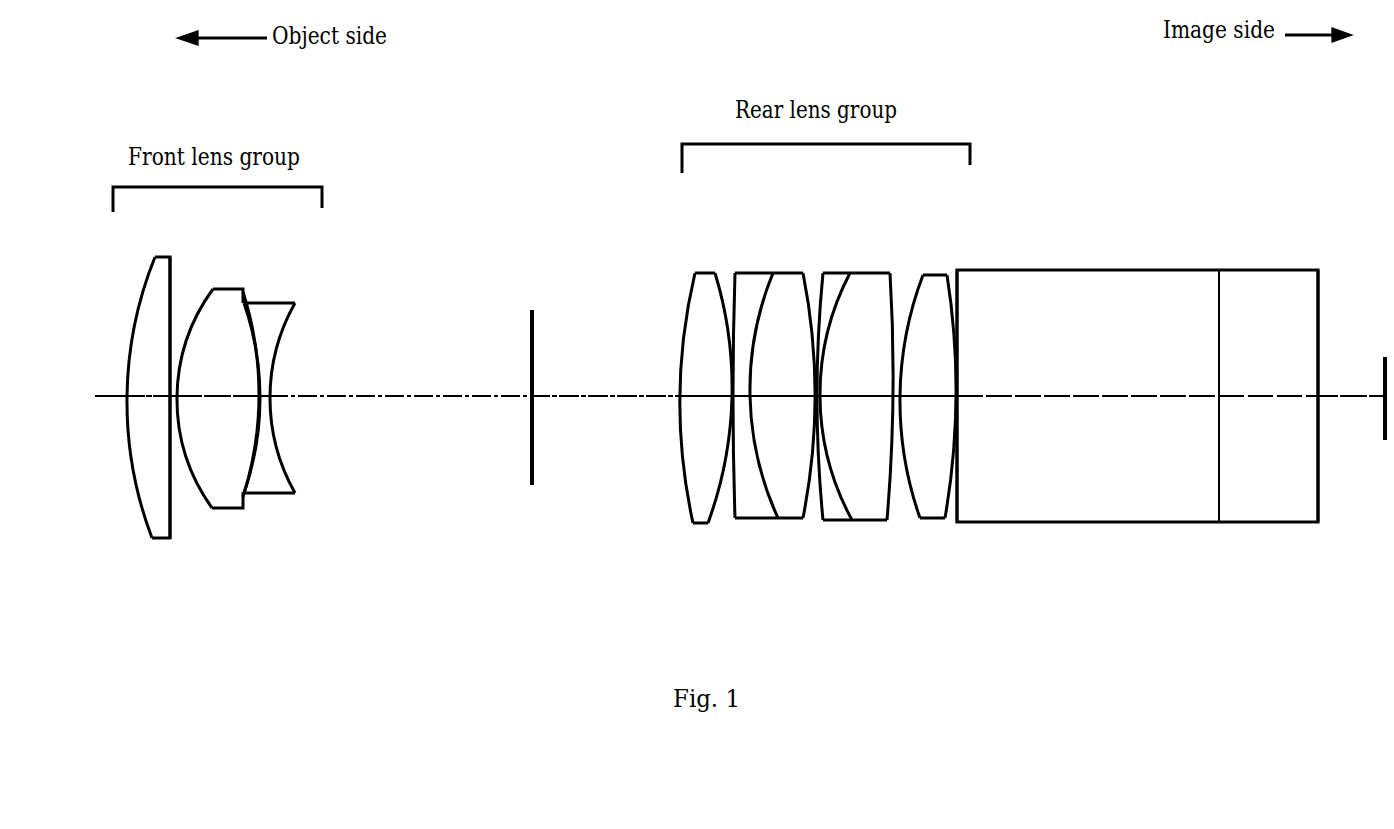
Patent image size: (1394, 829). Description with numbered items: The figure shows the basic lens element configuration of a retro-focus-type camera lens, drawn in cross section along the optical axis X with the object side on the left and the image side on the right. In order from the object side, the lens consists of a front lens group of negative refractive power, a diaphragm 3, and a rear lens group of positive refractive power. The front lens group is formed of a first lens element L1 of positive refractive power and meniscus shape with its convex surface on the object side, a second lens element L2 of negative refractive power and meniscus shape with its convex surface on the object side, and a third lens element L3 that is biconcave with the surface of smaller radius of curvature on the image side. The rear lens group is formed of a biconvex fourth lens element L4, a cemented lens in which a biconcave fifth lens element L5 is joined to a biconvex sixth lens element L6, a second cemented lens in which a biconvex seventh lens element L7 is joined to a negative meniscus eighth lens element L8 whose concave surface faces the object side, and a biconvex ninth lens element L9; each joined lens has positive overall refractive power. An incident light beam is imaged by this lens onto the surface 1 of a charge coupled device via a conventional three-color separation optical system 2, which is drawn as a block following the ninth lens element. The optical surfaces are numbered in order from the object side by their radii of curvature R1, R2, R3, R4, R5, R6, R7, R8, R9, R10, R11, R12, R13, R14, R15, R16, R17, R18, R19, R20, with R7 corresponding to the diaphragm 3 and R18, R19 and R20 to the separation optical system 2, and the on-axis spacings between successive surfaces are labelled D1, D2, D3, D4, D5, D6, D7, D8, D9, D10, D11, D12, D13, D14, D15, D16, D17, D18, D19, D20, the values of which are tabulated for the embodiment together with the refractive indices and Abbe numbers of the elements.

The surface of a charge coupled device 1 is at (1383, 360).
The three-color separation optical system 2 is at (1140, 247).
The diaphragm 3 is at (532, 310).
The optical axis X is at (103, 398).
The first lens element L1 is at (165, 255).
The second lens element L2 is at (225, 288).
The third lens element L3 is at (286, 306).
The fourth lens element L4 is at (698, 276).
The fifth lens element L5 is at (767, 276).
The sixth lens element L6 is at (793, 276).
The seventh lens element L7 is at (842, 276).
The eighth lens element L8 is at (881, 275).
The ninth lens element L9 is at (950, 276).
The radius of curvature of surface 1 R1 is at (143, 293).
The radius of curvature of surface 2 R2 is at (172, 272).
The radius of curvature of surface 3 R3 is at (200, 306).
The radius of curvature of surface 4 R4 is at (250, 330).
The radius of curvature of surface 5 R5 is at (256, 312).
The radius of curvature of surface 6 R6 is at (288, 345).
The radius of curvature of surface 7 R7 is at (530, 340).
The radius of curvature of surface 8 R8 is at (680, 310).
The radius of curvature of surface 9 R9 is at (722, 276).
The radius of curvature of surface 10 R10 is at (733, 286).
The radius of curvature of surface 11 R11 is at (774, 273).
The radius of curvature of surface 12 R12 is at (807, 297).
The radius of curvature of surface 13 R13 is at (820, 277).
The radius of curvature of surface 14 R14 is at (860, 276).
The radius of curvature of surface 15 R15 is at (875, 297).
The radius of curvature of surface 16 R16 is at (913, 283).
The radius of curvature of surface 17 R17 is at (955, 273).
The radius of curvature of surface 18 R18 is at (958, 289).
The radius of curvature of surface 19 R19 is at (1215, 287).
The radius of curvature of surface 20 R20 is at (1320, 290).
The on-axis spacing D1 is at (128, 383).
The on-axis spacing D2 is at (161, 406).
The on-axis spacing D3 is at (198, 388).
The on-axis spacing D4 is at (223, 400).
The on-axis spacing D5 is at (275, 422).
The on-axis spacing D6 is at (408, 400).
The on-axis spacing D7 is at (587, 399).
The on-axis spacing D8 is at (680, 406).
The on-axis spacing D9 is at (722, 405).
The on-axis spacing D10 is at (750, 386).
The on-axis spacing D11 is at (778, 400).
The on-axis spacing D12 is at (824, 388).
The on-axis spacing D13 is at (848, 403).
The on-axis spacing D14 is at (893, 389).
The on-axis spacing D15 is at (904, 407).
The on-axis spacing D16 is at (958, 388).
The on-axis spacing D17 is at (958, 401).
The on-axis spacing D18 is at (1096, 398).
The on-axis spacing D19 is at (1255, 398).
The on-axis spacing D20 is at (1347, 398).